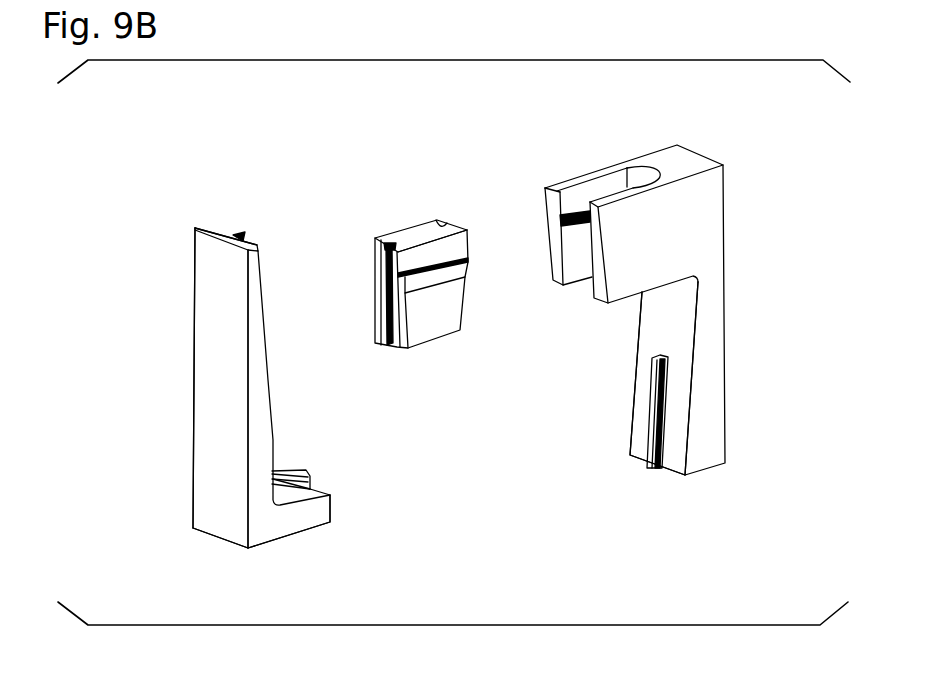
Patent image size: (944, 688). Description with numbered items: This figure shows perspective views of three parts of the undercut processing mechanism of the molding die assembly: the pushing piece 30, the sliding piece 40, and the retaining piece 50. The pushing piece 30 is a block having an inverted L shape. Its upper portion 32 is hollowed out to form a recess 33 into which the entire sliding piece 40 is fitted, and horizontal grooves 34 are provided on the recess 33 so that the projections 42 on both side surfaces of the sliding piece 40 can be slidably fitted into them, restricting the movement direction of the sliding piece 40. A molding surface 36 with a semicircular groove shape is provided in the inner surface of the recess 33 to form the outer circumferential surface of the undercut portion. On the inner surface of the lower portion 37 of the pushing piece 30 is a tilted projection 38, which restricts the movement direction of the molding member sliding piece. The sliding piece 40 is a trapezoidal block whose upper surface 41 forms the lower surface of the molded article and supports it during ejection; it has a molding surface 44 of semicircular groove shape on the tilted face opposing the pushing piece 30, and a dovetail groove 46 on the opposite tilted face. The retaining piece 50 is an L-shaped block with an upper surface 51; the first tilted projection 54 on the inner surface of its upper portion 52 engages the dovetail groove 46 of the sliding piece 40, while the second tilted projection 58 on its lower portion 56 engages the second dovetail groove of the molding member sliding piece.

The pushing piece 30 is at (697, 460).
The upper portion 32 is at (742, 142).
The recess 33 is at (600, 190).
The horizontal grooves 34 is at (560, 215).
The molding surface 36 is at (650, 168).
The lower portion 37 is at (740, 275).
The tilted projection 38 is at (650, 462).
The sliding piece 40 is at (414, 333).
The upper surface 41 is at (403, 238).
The projections 42 is at (404, 282).
The molding surface 44 is at (441, 224).
The dovetail groove 46 is at (386, 246).
The retaining piece 50 is at (215, 523).
The upper surface 51 is at (208, 228).
The upper portion 52 is at (172, 233).
The first tilted projection 54 is at (236, 233).
The lower portion 56 is at (347, 558).
The second tilted projection 58 is at (308, 477).